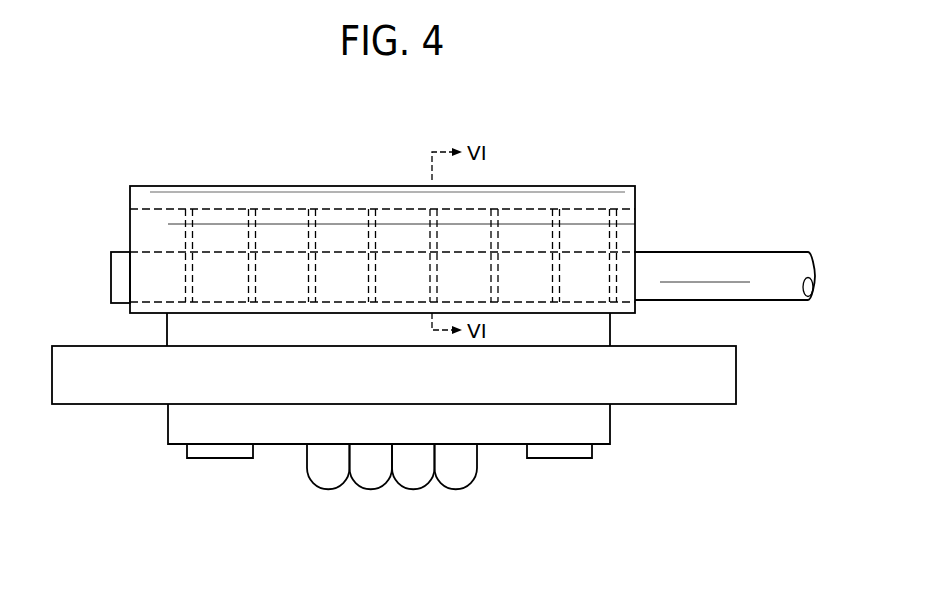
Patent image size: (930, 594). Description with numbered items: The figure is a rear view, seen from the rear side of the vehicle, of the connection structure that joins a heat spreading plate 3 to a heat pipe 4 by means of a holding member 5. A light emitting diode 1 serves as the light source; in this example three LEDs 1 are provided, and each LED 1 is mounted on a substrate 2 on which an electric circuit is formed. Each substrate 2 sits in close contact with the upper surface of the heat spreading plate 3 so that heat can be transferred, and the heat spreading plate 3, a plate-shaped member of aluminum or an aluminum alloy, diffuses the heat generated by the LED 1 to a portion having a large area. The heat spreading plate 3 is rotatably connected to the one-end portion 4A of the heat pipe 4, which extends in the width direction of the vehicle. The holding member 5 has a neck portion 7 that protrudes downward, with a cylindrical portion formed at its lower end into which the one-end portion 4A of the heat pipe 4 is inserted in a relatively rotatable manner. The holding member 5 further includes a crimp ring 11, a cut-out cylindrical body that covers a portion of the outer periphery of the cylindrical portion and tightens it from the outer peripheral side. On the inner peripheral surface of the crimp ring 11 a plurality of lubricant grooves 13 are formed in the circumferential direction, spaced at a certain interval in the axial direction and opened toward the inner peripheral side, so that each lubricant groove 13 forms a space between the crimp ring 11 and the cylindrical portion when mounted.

The light emitting diode 1 is at (372, 488).
The substrate 2 is at (278, 438).
The heat spreading plate 3 is at (108, 398).
The heat pipe 4 is at (770, 252).
The one-end portion 4A is at (120, 274).
The holding member 5 is at (627, 142).
The neck portion 7 is at (166, 333).
The crimp ring 11 is at (165, 186).
The lubricant groove 13 is at (365, 238).